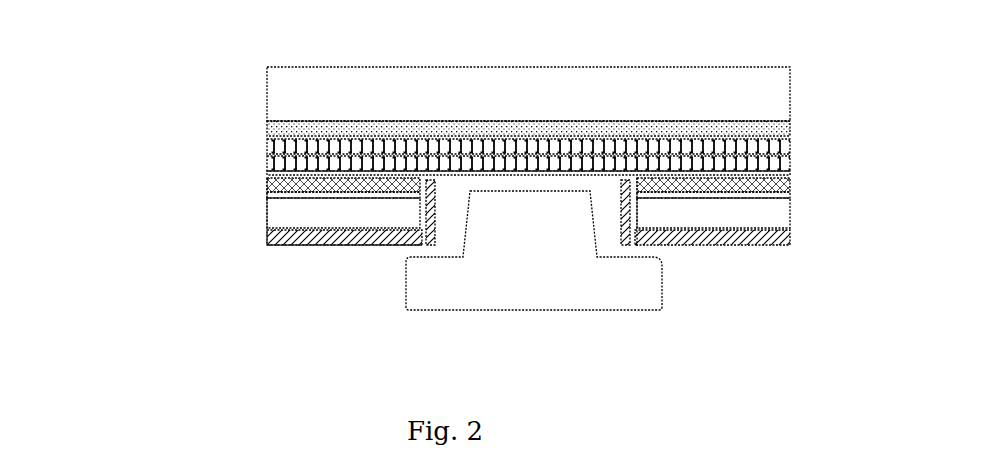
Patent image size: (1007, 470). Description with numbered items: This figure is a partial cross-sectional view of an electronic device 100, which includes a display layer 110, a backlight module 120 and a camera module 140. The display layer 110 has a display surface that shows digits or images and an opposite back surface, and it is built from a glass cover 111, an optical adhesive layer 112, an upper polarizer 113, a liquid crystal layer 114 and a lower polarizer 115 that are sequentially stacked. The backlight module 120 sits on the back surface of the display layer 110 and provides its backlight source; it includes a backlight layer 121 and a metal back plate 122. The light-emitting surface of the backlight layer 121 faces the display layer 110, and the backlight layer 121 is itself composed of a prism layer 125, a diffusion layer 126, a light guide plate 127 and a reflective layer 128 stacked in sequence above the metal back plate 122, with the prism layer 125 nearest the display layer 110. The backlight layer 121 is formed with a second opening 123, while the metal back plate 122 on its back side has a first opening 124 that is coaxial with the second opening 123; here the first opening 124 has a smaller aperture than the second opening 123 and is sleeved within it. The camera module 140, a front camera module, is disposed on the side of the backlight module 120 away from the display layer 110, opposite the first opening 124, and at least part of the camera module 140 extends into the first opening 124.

The electronic device 100 is at (70, 51).
The display layer 110 is at (891, 43).
The glass cover 111 is at (790, 82).
The optical adhesive layer 112 is at (790, 118).
The upper polarizer 113 is at (790, 140).
The liquid crystal layer 114 is at (790, 163).
The lower polarizer 115 is at (790, 173).
The backlight module 120 is at (105, 198).
The backlight layer 121 is at (159, 143).
The metal back plate 122 is at (300, 247).
The second opening 123 is at (433, 222).
The first opening 124 is at (452, 235).
The prism layer 125 is at (267, 182).
The diffusion layer 126 is at (267, 198).
The light guide plate 127 is at (267, 225).
The reflective layer 128 is at (267, 240).
The camera module 140 is at (547, 295).